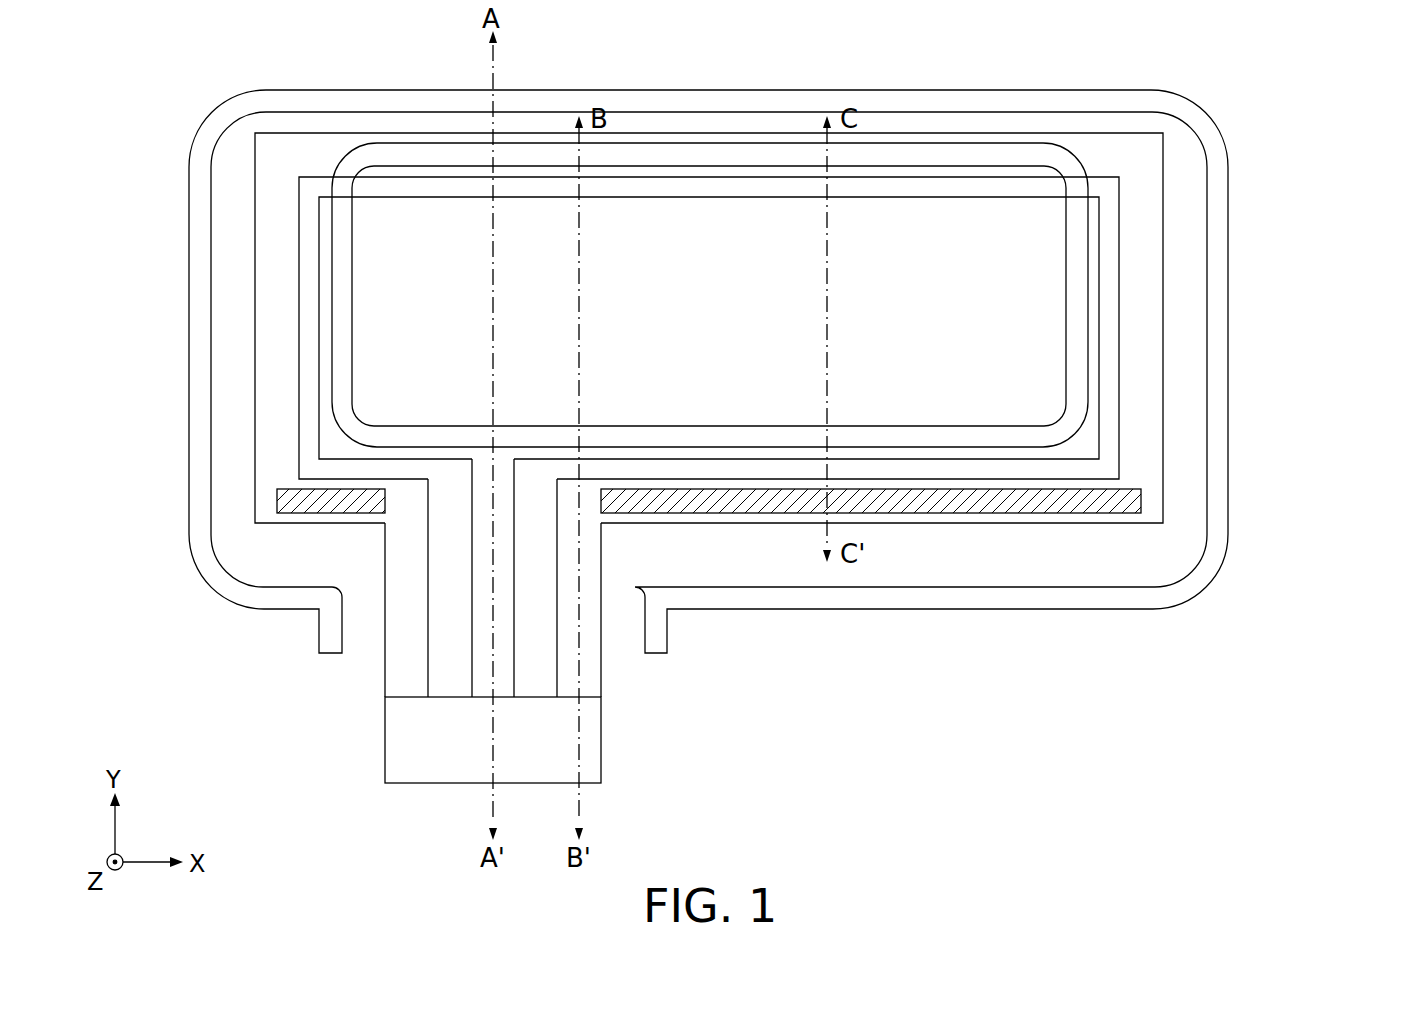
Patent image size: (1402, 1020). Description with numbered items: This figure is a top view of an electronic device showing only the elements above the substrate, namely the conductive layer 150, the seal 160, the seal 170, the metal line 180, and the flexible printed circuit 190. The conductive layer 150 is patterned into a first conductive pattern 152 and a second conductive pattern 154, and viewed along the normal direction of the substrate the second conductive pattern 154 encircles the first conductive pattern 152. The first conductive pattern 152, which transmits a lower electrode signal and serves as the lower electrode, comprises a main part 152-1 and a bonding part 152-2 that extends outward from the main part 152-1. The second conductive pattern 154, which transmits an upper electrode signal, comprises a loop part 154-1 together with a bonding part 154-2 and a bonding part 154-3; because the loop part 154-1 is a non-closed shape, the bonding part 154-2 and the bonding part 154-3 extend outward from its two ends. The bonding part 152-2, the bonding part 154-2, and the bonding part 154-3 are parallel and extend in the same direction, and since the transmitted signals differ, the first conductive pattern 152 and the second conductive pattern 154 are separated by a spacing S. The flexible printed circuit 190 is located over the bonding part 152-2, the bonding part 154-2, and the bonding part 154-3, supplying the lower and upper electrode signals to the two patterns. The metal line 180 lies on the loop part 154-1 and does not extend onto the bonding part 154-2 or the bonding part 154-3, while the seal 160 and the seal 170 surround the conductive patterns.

The conductive layer 150 is at (820, 489).
The first conductive pattern 152 is at (733, 504).
The main part 152-1 is at (746, 325).
The bonding part 152-2 is at (480, 650).
The second conductive pattern 154 is at (820, 489).
The loop part 154-1 is at (1148, 380).
The bonding part 154-2 is at (397, 546).
The bonding part 154-3 is at (592, 553).
The seal 160 is at (1073, 294).
The seal 170 is at (1220, 219).
The metal line 180 is at (927, 502).
The flexible printed circuit 190 is at (460, 755).
The spacing S is at (448, 563).